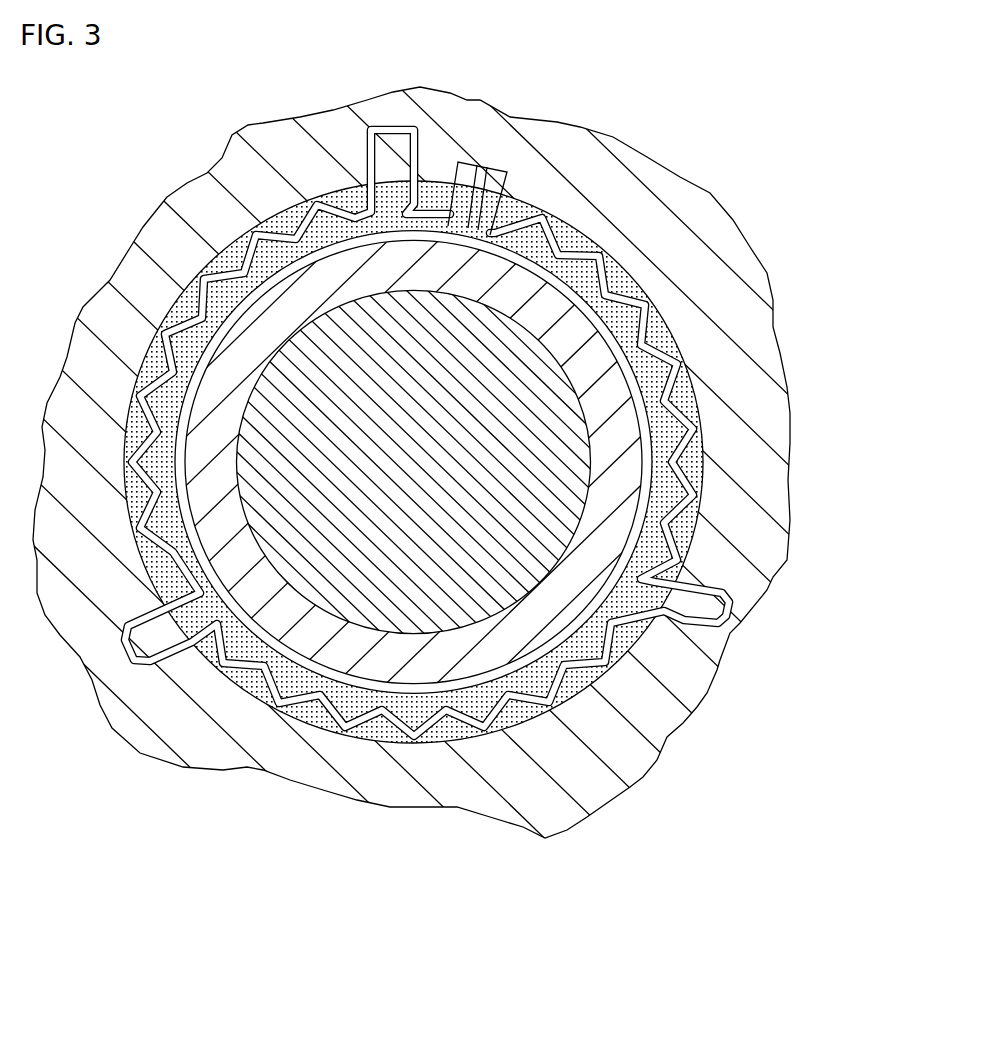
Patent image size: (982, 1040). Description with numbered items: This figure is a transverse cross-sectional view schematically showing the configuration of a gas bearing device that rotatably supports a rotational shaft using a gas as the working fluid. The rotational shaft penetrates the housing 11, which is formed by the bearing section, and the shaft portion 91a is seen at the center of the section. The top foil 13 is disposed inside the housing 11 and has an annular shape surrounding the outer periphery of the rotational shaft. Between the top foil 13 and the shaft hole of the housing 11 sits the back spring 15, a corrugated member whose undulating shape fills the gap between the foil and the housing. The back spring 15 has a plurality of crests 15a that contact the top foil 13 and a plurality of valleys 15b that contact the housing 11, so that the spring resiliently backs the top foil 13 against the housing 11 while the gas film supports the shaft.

The housing 11 is at (765, 480).
The top foil 13 is at (577, 640).
The back spring 15 is at (481, 513).
The crests 15a is at (288, 686).
The valleys 15b is at (350, 713).
The shaft 91a is at (478, 322).